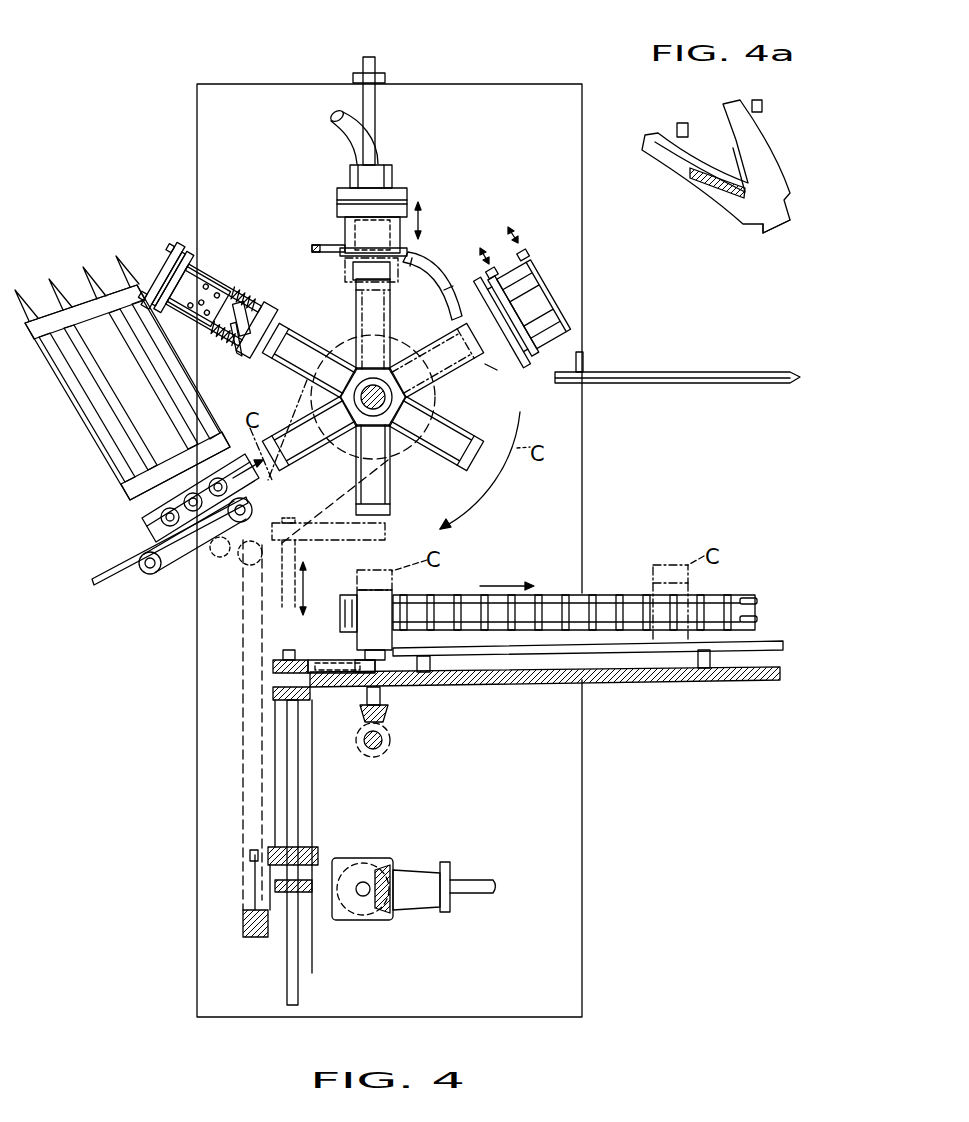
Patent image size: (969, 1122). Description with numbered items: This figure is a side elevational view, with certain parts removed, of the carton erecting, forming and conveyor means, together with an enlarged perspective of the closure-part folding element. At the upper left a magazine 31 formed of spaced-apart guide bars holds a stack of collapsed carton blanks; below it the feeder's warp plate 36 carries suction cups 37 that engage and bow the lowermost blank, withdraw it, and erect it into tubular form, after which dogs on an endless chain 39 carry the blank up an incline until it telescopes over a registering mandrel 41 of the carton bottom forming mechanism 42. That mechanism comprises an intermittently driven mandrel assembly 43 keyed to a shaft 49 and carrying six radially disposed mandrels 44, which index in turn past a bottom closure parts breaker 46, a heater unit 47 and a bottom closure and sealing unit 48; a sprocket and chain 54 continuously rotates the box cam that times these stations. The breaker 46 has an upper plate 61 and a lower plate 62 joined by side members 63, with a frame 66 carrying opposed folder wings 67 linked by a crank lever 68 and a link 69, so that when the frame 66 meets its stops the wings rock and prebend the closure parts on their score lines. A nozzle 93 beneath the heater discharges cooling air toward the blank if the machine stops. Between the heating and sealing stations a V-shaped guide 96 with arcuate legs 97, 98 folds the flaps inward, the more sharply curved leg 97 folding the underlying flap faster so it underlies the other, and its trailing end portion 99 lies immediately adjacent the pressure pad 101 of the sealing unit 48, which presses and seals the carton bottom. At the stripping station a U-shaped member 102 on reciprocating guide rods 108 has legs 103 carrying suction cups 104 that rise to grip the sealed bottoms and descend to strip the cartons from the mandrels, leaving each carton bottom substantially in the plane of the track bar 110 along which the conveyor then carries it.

In FIG. 4, the magazine 31 is at (98, 434).
In FIG. 4, the warp plate 36 is at (162, 513).
In FIG. 4, the suction cups 37 is at (232, 506).
In FIG. 4, the endless chain 39 is at (180, 563).
In FIG. 4, the registering mandrel 41 is at (309, 449).
In FIG. 4, the carton bottom forming mechanism 42 is at (295, 254).
In FIG. 4, the mandrel assembly 43 is at (443, 382).
In FIG. 4, the mandrels 44 is at (348, 358).
In FIG. 4, the bottom closure parts breaker 46 is at (212, 273).
In FIG. 4, the heater unit 47 is at (410, 186).
In FIG. 4, the bottom closure and sealing unit 48 is at (565, 310).
In FIG. 4, the shaft 49 is at (297, 447).
In FIG. 4, the sprocket and chain 54 is at (303, 406).
In FIG. 4, the upper plate 61 is at (194, 255).
In FIG. 4, the lower plate 62 is at (230, 288).
In FIG. 4, the side members 63 is at (208, 307).
In FIG. 4, the frame 66 is at (255, 313).
In FIG. 4, the folder wings 67 is at (250, 302).
In FIG. 4, the crank lever 68 is at (265, 326).
In FIG. 4, the link 69 is at (226, 334).
In FIG. 4, the nozzle 93 is at (408, 246).
In FIG. 4, the V-shaped guide 96 is at (421, 272).
In FIG. 4A, the V-shaped guide 96 is at (719, 198).
In FIG. 4A, the leg 97 is at (770, 138).
In FIG. 4A, the leg 98 is at (682, 168).
In FIG. 4A, the trailing end portion 99 is at (763, 228).
In FIG. 4, the pressure pad 101 is at (495, 346).
In FIG. 4, the U-shaped member 102 is at (272, 666).
In FIG. 4, the legs 103 is at (328, 660).
In FIG. 4, the suction cups 104 is at (388, 525).
In FIG. 4, the guide rods 108 is at (288, 797).
In FIG. 4, the track bar 110 is at (545, 650).